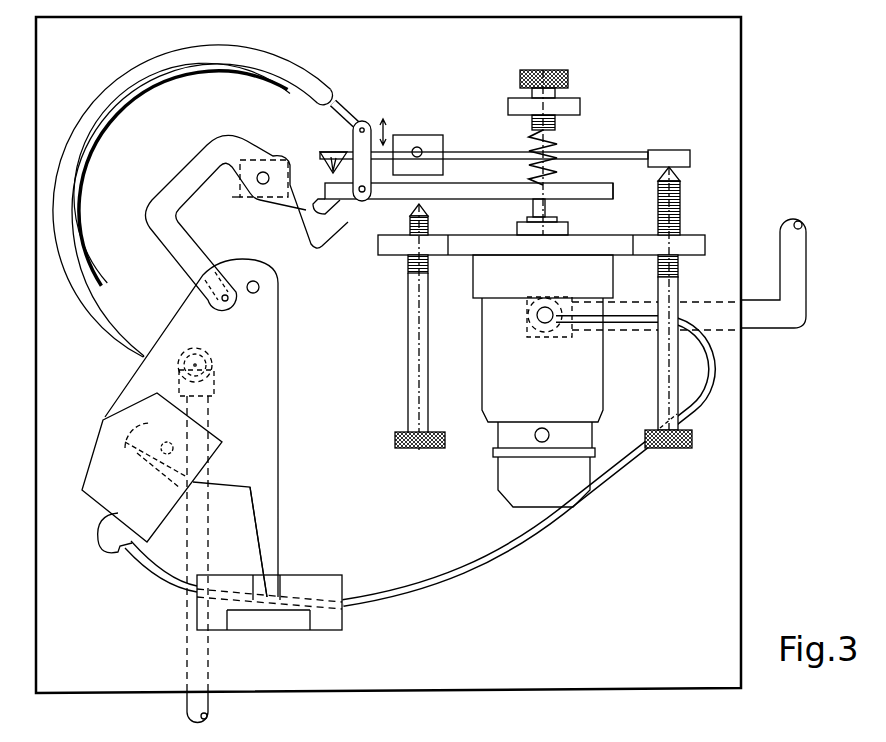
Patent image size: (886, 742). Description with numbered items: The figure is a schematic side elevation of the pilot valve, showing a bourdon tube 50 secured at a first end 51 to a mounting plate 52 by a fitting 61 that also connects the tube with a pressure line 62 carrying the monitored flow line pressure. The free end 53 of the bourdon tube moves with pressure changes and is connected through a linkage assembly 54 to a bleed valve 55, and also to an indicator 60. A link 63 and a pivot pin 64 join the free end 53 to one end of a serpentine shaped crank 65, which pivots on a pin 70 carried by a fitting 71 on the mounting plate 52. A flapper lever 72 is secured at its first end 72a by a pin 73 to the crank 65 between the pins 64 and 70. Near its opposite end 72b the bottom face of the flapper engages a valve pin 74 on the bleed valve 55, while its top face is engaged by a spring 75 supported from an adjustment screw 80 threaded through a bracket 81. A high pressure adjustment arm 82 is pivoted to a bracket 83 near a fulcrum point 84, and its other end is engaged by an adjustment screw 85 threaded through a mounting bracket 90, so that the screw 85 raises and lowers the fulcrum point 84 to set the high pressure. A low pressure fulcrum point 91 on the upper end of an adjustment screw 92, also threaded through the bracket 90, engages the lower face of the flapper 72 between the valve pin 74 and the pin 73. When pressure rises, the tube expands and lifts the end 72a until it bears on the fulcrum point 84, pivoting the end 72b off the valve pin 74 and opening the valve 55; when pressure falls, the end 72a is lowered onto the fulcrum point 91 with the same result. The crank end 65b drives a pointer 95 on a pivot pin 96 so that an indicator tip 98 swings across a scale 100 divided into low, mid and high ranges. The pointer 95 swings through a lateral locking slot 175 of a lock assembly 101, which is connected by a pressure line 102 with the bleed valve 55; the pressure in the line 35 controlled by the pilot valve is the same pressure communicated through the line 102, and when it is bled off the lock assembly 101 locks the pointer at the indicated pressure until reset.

The line 35 is at (790, 320).
The bourdon tube 50 is at (148, 76).
The first end 51 is at (212, 366).
The mounting plate 52 is at (40, 333).
The free end 53 is at (336, 86).
The linkage assembly 54 is at (487, 131).
The bleed valve 55 is at (586, 380).
The indicator 60 is at (313, 472).
The fitting 61 is at (214, 384).
The pressure line 62 is at (212, 706).
The link 63 is at (355, 114).
The pivot pin 64 is at (354, 130).
The serpentine shaped crank 65 is at (222, 140).
The end of the crank 65b is at (221, 310).
The pin 70 is at (258, 184).
The fitting 71 is at (242, 198).
The flapper lever 72 is at (489, 195).
The first end of the flapper 72a is at (328, 216).
The opposite end of the flapper 72b is at (613, 191).
The pin 73 is at (362, 202).
The valve pin 74 is at (548, 208).
The spring 75 is at (558, 165).
The adjustment screw 80 is at (570, 78).
The bracket 81 is at (578, 108).
The high pressure adjustment arm 82 is at (489, 151).
The bracket 83 is at (426, 140).
The fulcrum point 84 is at (322, 165).
The adjustment screw 85 is at (682, 208).
The mounting bracket 90 is at (692, 256).
The low pressure fulcrum point 91 is at (426, 210).
The adjustment screw 92 is at (408, 323).
The pointer 95 is at (279, 446).
The pivot pin 96 is at (260, 287).
The indicator tip 98 is at (268, 562).
The scale 100 is at (312, 630).
The lock assembly 101 is at (105, 486).
The pressure line 102 is at (470, 577).
The lateral locking slot 175 is at (156, 451).